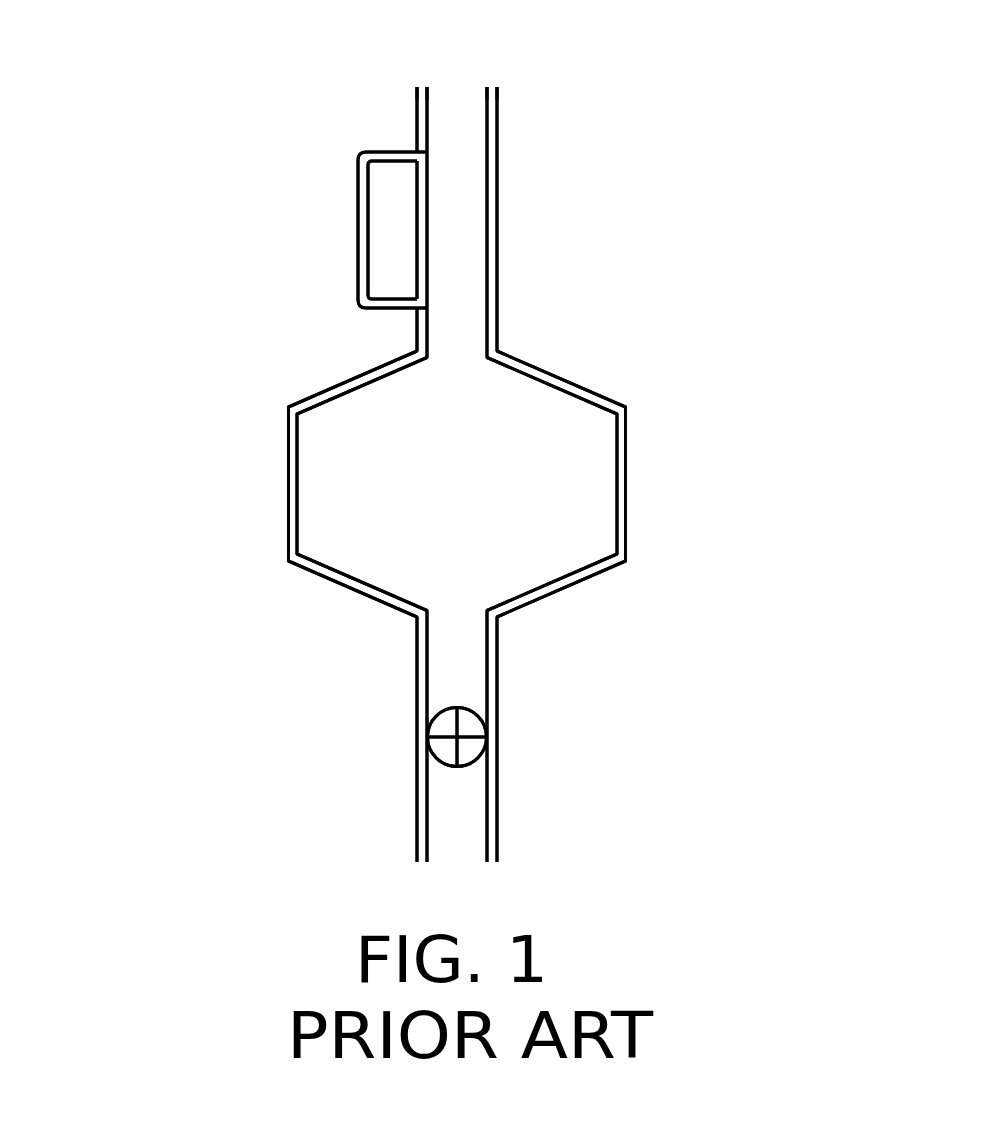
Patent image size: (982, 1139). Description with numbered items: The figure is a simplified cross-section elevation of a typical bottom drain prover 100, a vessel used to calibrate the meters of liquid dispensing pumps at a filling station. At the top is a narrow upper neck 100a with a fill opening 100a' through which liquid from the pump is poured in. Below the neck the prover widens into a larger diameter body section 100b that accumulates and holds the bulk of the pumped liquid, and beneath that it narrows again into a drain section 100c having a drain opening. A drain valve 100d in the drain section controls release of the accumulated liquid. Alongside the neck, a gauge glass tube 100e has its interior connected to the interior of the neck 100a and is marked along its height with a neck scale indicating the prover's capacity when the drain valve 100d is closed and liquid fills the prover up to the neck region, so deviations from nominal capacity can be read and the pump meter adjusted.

The bottom drain prover 100 is at (248, 81).
The upper neck 100a is at (585, 219).
The fill opening 100a' is at (506, 61).
The body section 100b is at (658, 409).
The drain section 100c is at (547, 620).
The drain valve 100d is at (468, 749).
The gauge glass tube 100e is at (345, 178).